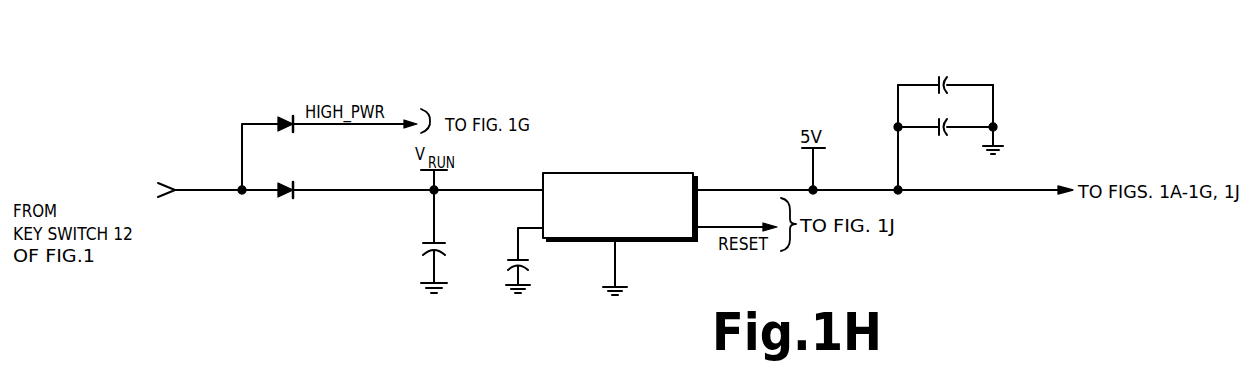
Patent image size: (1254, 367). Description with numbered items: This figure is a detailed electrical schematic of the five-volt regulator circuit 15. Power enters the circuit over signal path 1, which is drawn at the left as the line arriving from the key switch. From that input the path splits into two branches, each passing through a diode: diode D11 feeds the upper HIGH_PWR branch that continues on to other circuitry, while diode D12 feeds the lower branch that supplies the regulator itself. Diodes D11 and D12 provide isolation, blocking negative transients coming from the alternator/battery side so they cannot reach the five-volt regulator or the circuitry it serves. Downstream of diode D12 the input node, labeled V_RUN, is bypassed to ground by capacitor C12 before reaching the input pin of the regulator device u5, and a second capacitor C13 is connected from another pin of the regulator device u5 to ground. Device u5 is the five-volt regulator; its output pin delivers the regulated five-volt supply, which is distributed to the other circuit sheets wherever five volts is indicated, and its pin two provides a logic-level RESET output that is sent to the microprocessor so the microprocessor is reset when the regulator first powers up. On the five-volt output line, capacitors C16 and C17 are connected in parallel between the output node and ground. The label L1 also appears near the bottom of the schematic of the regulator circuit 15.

The signal path 1 is at (193, 190).
The diode D11 is at (290, 114).
The diode D12 is at (299, 187).
The capacitor C12 is at (430, 250).
The capacitor C13 is at (529, 271).
The capacitor C16 is at (950, 132).
The capacitor C17 is at (952, 80).
The 5 volt regulator device u5 is at (646, 172).
The 5-volt regulator circuit 15 is at (403, 284).
The inductor L1 label L1 is at (520, 357).